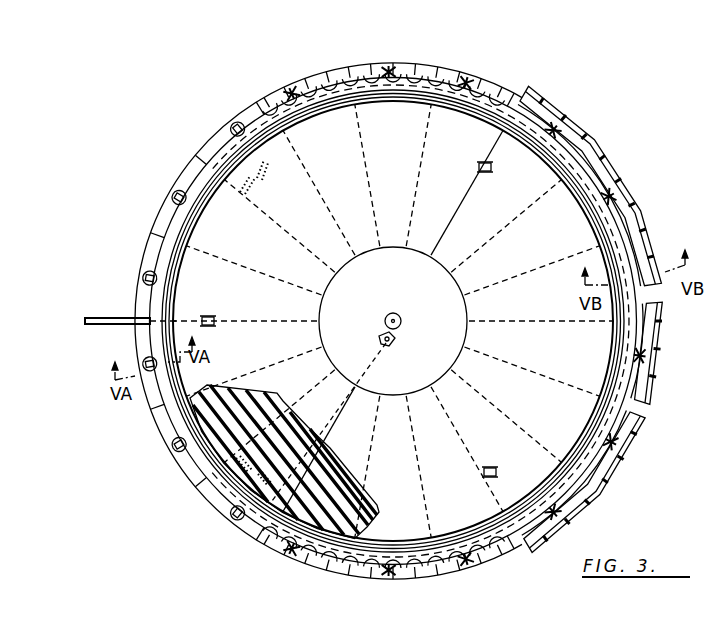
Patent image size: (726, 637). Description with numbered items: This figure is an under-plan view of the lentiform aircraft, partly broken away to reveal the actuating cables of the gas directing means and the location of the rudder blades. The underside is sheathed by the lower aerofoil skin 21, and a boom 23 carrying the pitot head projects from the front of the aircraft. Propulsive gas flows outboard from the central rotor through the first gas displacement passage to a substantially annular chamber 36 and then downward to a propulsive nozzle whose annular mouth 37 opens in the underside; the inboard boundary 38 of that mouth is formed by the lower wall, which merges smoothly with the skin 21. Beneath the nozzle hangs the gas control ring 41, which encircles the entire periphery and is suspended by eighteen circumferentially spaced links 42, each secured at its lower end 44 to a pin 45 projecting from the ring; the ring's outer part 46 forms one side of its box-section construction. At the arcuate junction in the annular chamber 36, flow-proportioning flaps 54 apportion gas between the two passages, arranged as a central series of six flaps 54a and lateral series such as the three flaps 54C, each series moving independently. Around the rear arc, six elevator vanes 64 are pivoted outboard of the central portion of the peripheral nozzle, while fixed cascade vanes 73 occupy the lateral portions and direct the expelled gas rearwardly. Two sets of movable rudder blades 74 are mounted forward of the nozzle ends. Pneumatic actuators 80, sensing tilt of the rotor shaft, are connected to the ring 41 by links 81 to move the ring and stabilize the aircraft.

The lower aerofoil skin 21 is at (550, 200).
The boom 23 is at (115, 321).
The annular chamber 36 is at (222, 448).
The annular mouth 37 is at (203, 193).
The inboard boundary of the mouth 38 is at (190, 228).
The gas control ring 41 is at (220, 153).
The link 42 is at (152, 278).
The lower end of link 44 is at (177, 440).
The pin 45 is at (237, 512).
The outer part of the ring 46 is at (173, 420).
The flaps 54 is at (547, 483).
The central series of flaps 54a is at (550, 478).
The lateral series of flaps 54C is at (437, 547).
The elevator vane 64 is at (647, 417).
The fixed cascade vanes 73 is at (305, 562).
The rudder blades 74 is at (232, 463).
The pneumatic actuator 80 is at (394, 340).
The link 81 is at (379, 365).